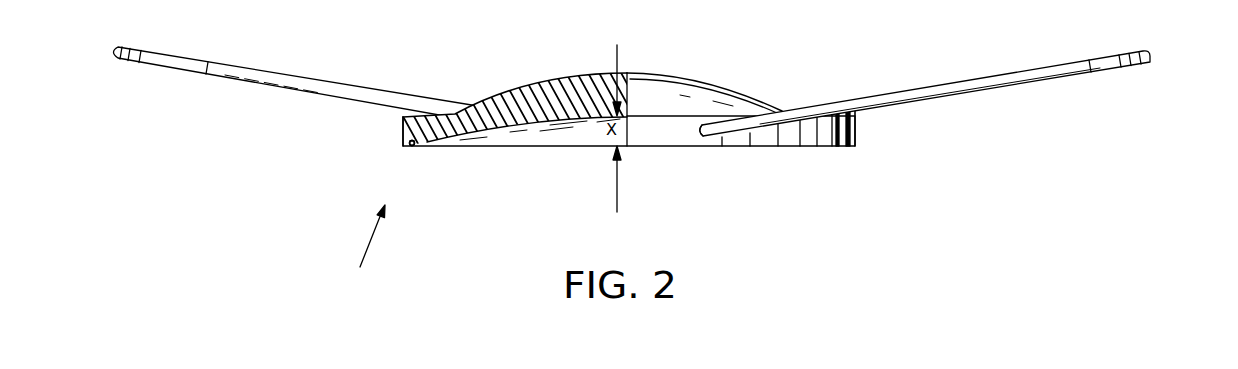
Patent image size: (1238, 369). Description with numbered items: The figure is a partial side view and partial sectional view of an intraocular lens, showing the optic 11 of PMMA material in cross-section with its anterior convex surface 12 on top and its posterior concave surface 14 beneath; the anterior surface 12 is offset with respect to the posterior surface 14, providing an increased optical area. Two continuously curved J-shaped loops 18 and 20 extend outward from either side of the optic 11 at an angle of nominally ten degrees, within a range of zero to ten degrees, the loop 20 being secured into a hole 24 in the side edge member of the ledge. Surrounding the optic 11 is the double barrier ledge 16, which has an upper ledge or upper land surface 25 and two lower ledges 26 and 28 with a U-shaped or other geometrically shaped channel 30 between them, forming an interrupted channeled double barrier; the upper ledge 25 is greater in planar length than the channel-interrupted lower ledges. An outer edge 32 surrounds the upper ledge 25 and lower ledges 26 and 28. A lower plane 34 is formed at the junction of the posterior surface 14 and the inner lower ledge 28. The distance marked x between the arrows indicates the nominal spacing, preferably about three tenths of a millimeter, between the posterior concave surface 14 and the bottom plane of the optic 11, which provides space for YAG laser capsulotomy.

The optic 11 is at (643, 73).
The anterior convex surface 12 is at (705, 80).
The posterior concave surface 14 is at (548, 118).
The double barrier ledge 16 is at (367, 249).
The J-shaped loop 18 is at (108, 53).
The J-shaped loop 20 is at (1150, 55).
The hole 24 is at (699, 131).
The upper ledge 25 is at (408, 115).
The lower ledge 26 is at (407, 147).
The lower ledge 28 is at (415, 147).
The channel 30 is at (410, 147).
The outer edge 32 is at (367, 129).
The lower plane 34 is at (722, 148).